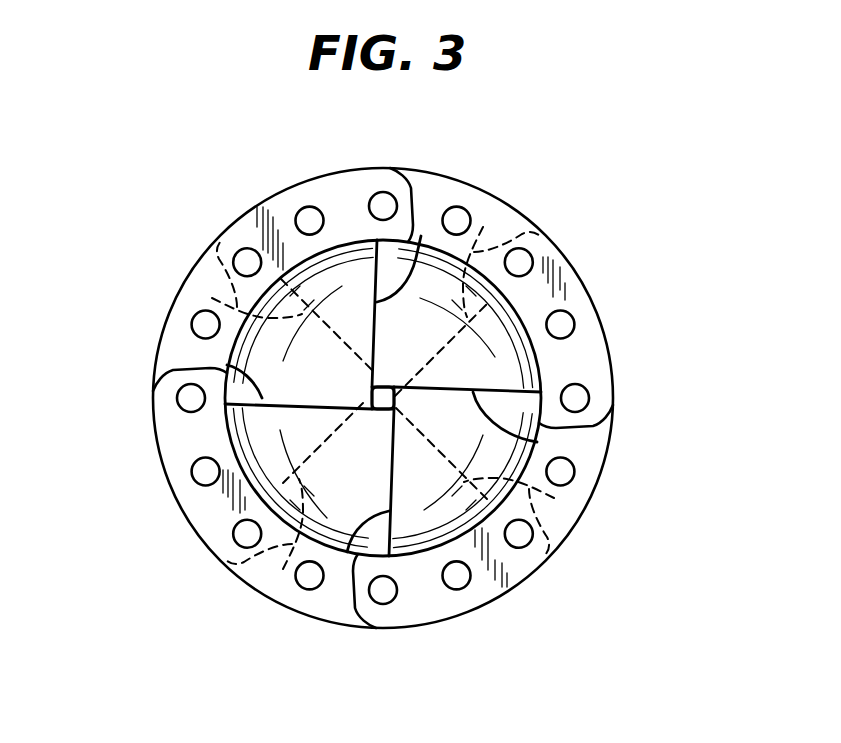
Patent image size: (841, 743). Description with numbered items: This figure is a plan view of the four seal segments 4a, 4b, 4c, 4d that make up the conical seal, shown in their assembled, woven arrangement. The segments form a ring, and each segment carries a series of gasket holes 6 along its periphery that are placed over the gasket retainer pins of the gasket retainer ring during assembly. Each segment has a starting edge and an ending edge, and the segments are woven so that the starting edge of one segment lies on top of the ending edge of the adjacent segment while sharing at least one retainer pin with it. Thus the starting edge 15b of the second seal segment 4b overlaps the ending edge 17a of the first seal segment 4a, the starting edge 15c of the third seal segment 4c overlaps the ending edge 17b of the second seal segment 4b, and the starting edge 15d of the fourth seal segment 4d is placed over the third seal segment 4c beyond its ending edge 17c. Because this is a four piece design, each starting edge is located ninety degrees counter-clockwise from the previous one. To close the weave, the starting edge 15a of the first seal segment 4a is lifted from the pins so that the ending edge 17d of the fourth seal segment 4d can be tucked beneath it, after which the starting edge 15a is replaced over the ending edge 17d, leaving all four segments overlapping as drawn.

The gasket holes 6 is at (243, 257).
The starting edge of first seal segment 15a is at (227, 365).
The starting edge of second seal segment 15b is at (347, 552).
The starting edge of third seal segment 15c is at (537, 442).
The starting edge of fourth seal segment 15d is at (421, 236).
The first seal segment 4a is at (178, 503).
The second seal segment 4b is at (531, 574).
The third seal segment 4c is at (587, 281).
The fourth seal segment 4d is at (191, 265).
The ending edge of first seal segment 17a is at (483, 227).
The ending edge of second seal segment 17b is at (212, 298).
The ending edge of third seal segment 17c is at (283, 569).
The ending edge of fourth seal segment 17d is at (554, 498).